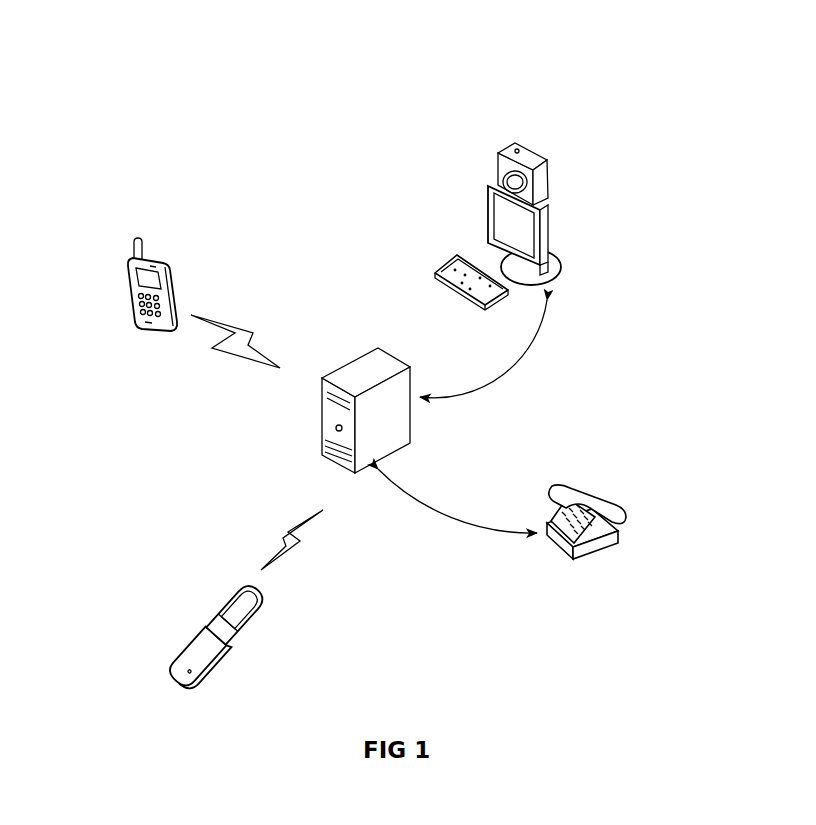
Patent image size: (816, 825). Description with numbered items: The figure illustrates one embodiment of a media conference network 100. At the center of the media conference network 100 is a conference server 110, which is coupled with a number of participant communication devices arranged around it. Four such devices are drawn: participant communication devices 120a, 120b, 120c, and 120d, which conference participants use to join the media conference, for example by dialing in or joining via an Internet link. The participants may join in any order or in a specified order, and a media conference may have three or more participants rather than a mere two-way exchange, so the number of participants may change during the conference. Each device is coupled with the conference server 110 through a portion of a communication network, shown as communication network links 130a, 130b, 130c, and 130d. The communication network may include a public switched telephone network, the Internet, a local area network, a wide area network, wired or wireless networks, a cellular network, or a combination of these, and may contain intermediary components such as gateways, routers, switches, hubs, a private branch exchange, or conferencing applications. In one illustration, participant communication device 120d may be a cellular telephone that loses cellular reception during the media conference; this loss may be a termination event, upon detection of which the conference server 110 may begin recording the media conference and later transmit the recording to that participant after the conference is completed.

The media conference network 100 is at (318, 55).
The conference server 110 is at (353, 357).
The participant communication device 120a is at (124, 259).
The participant communication device 120b is at (563, 186).
The participant communication device 120c is at (637, 509).
The participant communication device 120d is at (196, 622).
The communication network 130a is at (243, 327).
The communication network 130b is at (522, 365).
The communication network 130c is at (423, 521).
The communication network 130d is at (300, 572).